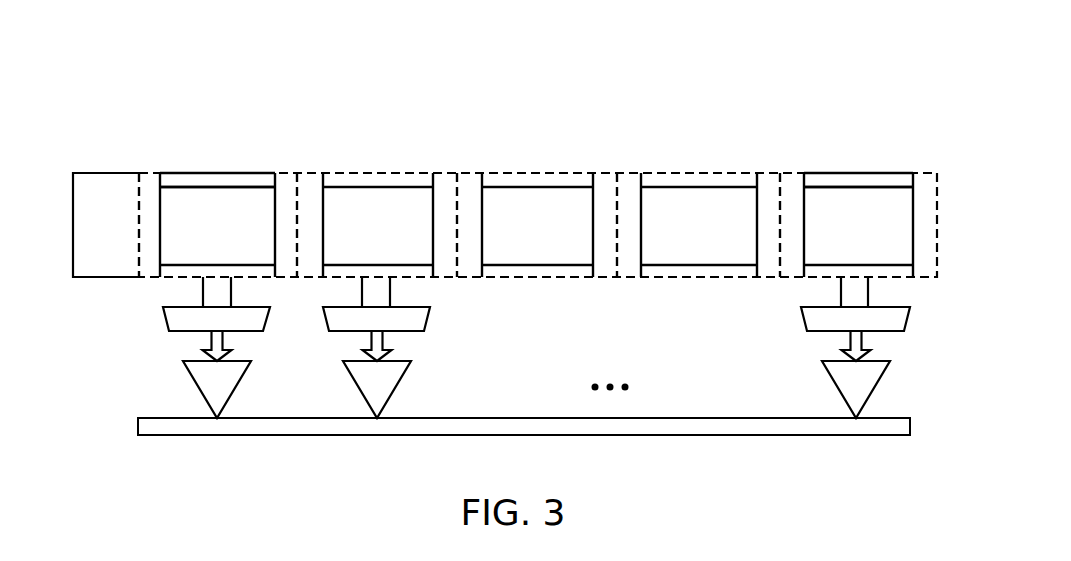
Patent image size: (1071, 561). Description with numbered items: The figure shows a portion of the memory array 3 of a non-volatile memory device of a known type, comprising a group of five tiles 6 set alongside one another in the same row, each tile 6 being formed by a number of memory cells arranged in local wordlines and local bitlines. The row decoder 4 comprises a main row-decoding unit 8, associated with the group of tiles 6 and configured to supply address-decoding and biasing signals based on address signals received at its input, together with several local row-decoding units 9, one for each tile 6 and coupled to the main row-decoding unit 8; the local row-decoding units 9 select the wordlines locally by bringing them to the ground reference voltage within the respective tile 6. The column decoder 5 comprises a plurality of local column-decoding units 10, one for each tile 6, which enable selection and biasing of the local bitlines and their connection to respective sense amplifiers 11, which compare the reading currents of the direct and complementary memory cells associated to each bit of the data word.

The memory array 3 is at (921, 156).
The row decoder 4 is at (110, 303).
The column decoder 5 is at (156, 322).
The tile 6 is at (227, 218).
The main row-decoding unit 8 is at (93, 181).
The local row-decoding unit 9 is at (150, 171).
The local column-decoding unit 10 is at (194, 178).
The sense amplifier 11 is at (187, 362).